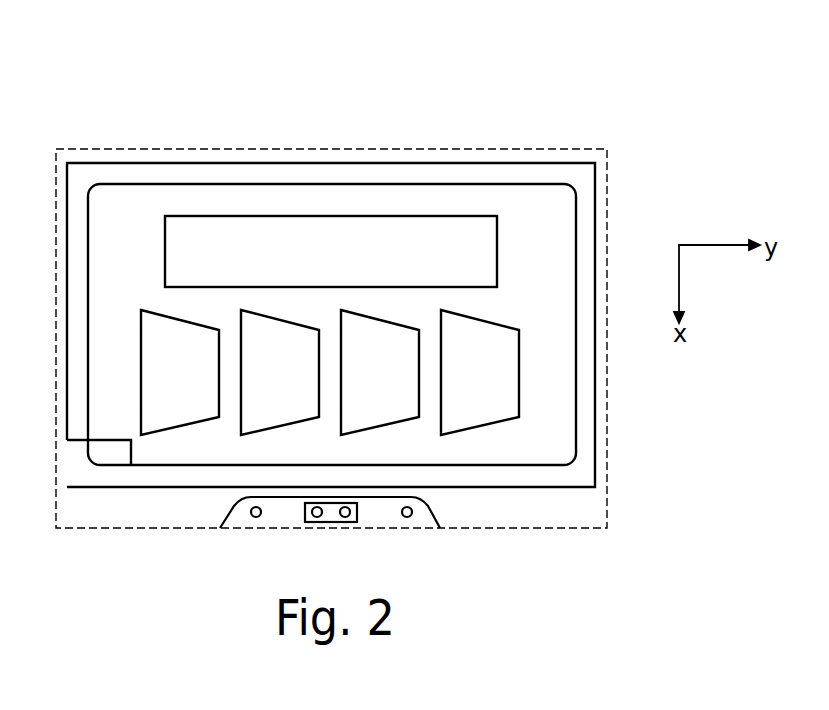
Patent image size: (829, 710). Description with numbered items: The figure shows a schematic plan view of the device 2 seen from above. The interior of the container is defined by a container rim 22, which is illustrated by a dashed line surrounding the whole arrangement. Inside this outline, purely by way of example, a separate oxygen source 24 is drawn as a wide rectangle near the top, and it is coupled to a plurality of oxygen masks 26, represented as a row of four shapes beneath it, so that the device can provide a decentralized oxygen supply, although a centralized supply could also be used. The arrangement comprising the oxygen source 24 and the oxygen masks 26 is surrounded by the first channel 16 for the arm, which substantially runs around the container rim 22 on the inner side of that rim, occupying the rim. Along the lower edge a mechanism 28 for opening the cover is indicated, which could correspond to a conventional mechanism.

The device 2 is at (571, 81).
The first channel 16 is at (343, 173).
The container rim 22 is at (607, 207).
The oxygen source 24 is at (346, 264).
The oxygen masks 26 is at (196, 387).
The mechanism 28 is at (378, 514).